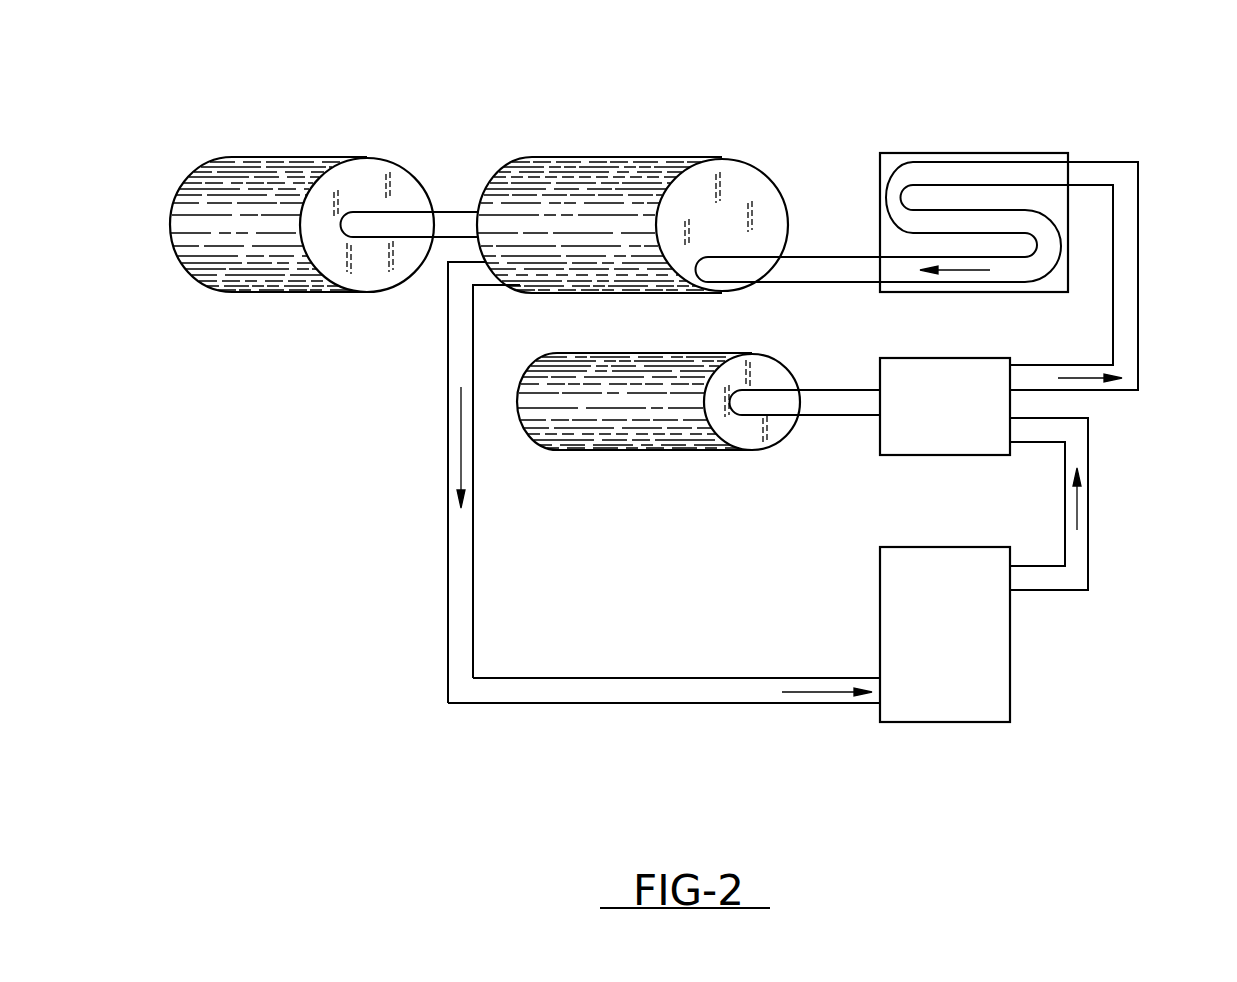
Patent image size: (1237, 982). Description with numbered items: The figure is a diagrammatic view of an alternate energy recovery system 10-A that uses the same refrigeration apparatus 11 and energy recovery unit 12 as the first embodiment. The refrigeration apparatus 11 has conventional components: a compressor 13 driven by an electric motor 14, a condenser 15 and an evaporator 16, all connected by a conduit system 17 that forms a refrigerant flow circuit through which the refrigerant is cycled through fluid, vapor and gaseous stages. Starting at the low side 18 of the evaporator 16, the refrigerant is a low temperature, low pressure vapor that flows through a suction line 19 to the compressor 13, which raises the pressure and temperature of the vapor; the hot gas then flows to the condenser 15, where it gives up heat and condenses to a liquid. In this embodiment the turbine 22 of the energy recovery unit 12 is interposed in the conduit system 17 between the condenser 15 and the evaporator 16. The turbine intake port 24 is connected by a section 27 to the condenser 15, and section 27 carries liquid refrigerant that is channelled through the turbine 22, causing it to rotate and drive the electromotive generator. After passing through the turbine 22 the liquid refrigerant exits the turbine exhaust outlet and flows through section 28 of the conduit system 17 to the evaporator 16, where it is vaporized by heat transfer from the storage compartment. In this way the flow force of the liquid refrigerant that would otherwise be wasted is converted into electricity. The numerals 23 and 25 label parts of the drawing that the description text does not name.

The alternate energy recovery system 10-A is at (783, 143).
The refrigeration apparatus 11 is at (516, 319).
The energy recovery unit 12 is at (541, 487).
The compressor 13 is at (623, 172).
The electric motor 14 is at (266, 172).
The condenser 15 is at (985, 648).
The evaporator 16 is at (990, 152).
The conduit system 17 is at (757, 704).
The low side of the evaporator 18 is at (890, 268).
The suction line 19 is at (808, 268).
The turbine 22 is at (922, 435).
The auxiliary cylinder 23 is at (683, 437).
The turbine intake port 24 is at (1010, 432).
The inlet 25 is at (1012, 382).
The conduit section 27 is at (1085, 527).
The conduit section 28 is at (1130, 275).